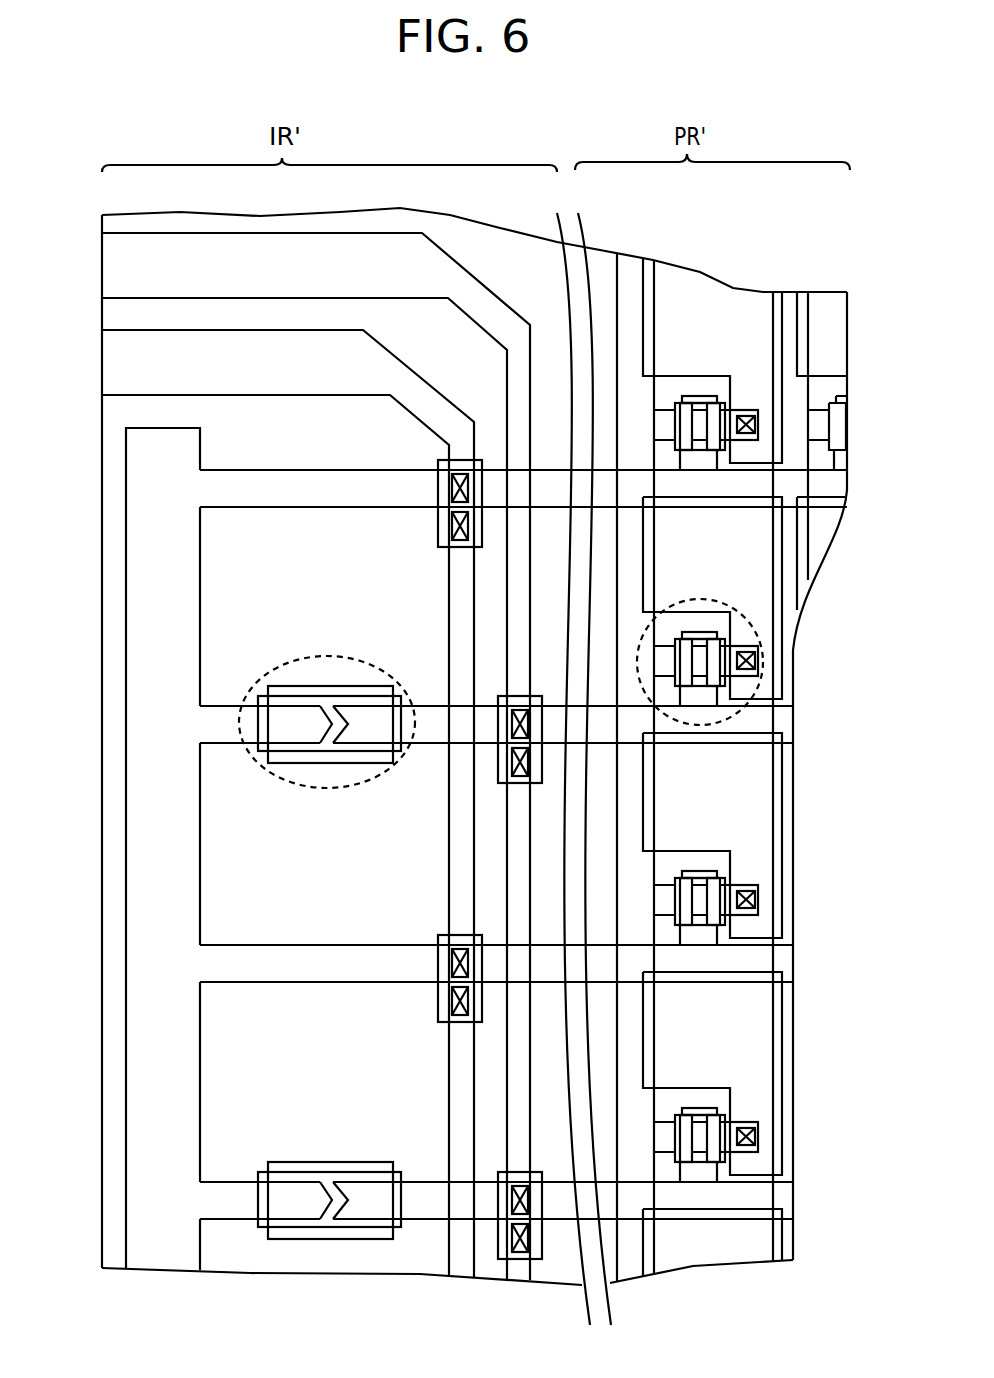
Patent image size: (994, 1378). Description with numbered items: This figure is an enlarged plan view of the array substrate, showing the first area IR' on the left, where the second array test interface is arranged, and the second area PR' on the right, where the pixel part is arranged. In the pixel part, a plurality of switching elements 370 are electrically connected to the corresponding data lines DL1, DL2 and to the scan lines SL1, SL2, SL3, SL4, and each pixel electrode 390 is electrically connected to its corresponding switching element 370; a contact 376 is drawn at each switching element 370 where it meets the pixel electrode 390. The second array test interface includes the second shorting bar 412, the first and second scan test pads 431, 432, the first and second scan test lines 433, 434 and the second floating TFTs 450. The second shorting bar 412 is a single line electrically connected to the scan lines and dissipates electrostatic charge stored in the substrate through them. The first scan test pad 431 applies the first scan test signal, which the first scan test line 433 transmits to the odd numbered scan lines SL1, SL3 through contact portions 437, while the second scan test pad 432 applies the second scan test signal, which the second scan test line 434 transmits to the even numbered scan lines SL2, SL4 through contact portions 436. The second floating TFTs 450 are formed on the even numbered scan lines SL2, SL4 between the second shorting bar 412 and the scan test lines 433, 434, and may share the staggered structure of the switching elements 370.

The second scan test pad 432 is at (120, 269).
The first scan test pad 431 is at (120, 356).
The second shorting bar 412 is at (140, 493).
The first scan test line 433 is at (422, 380).
The second scan test line 434 is at (498, 302).
The contact portion 437 is at (438, 527).
The contact portion 436 is at (500, 773).
The second floating TFT 450 is at (313, 657).
The switching element 370 is at (688, 598).
The contact hole 376 is at (745, 650).
The pixel electrode 390 is at (752, 528).
The first scan line SL1 is at (233, 500).
The second scan line SL2 is at (233, 740).
The third scan line SL3 is at (233, 975).
The fourth scan line SL4 is at (233, 1212).
The first data line DL1 is at (627, 265).
The second data line DL2 is at (787, 297).